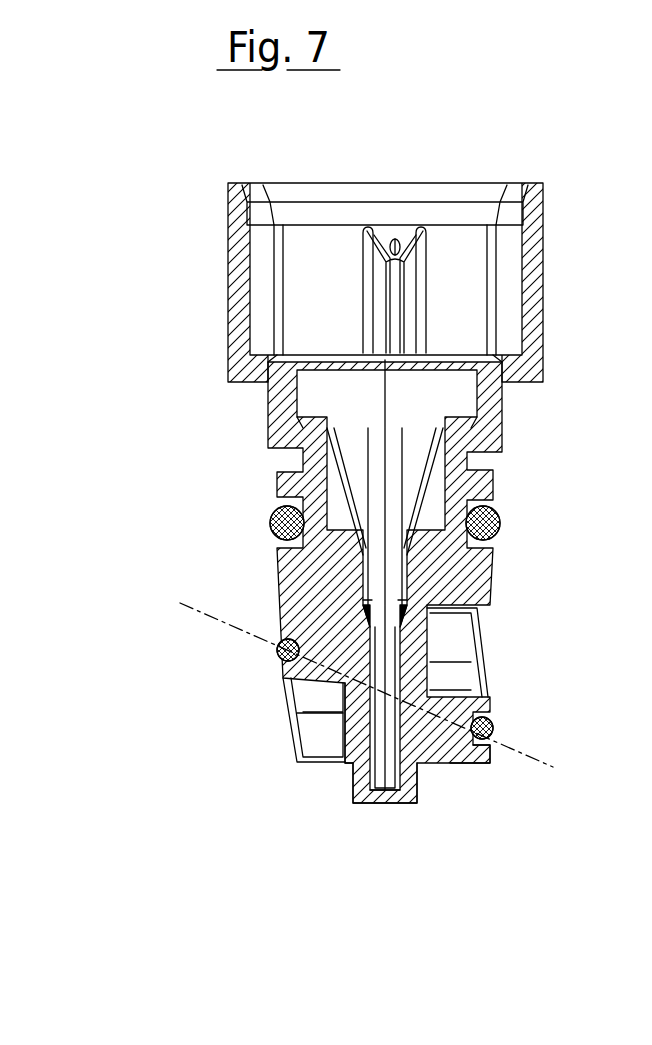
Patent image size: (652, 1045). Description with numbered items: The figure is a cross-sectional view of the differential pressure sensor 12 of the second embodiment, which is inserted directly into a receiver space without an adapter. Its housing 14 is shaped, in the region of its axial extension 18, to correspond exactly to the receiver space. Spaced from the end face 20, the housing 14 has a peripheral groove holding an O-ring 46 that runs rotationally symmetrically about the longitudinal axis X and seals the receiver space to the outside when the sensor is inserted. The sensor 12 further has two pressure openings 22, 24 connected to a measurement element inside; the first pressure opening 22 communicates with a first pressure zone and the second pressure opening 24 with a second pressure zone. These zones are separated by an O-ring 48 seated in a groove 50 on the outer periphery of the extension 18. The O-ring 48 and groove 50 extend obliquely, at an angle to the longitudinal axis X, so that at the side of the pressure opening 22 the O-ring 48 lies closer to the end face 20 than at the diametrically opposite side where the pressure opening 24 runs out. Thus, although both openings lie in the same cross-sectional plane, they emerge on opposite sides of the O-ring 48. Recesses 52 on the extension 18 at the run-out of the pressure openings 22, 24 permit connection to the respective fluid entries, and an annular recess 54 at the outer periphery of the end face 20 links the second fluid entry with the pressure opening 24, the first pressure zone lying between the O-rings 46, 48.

The differential pressure sensor 12 is at (225, 275).
The housing 14 is at (502, 432).
The axial extension 18 is at (367, 570).
The end face 20 is at (392, 815).
The first pressure opening 22 is at (447, 690).
The second pressure opening 24 is at (300, 712).
The O-ring 46 is at (500, 523).
The O-ring 48 is at (495, 732).
The groove 50 is at (495, 760).
The recesses 52 is at (457, 643).
The annular recess 54 is at (348, 775).
The longitudinal axis X is at (372, 612).